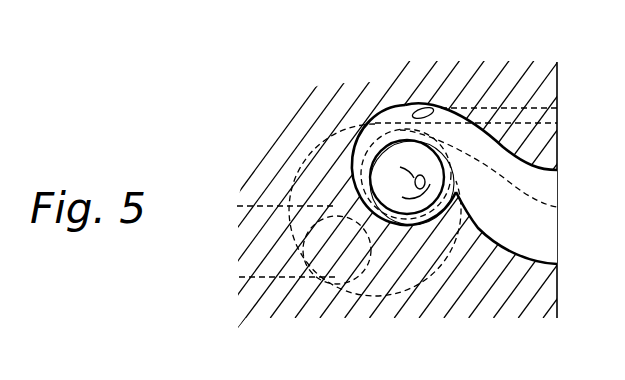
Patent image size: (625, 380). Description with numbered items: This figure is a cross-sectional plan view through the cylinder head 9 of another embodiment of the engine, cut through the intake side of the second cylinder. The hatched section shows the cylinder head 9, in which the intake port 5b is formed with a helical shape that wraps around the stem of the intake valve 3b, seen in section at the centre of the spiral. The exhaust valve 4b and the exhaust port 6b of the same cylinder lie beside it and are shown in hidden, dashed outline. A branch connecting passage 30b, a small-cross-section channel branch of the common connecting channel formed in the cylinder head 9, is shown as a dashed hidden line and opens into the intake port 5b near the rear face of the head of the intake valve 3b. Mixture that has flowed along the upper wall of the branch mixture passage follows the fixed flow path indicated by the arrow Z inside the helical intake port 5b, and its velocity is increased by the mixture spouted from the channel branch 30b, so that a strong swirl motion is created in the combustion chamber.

The intake valve 3b is at (393, 152).
The exhaust valve 4b is at (327, 250).
The intake port 5b is at (532, 230).
The exhaust port 6b is at (246, 207).
The branch connecting passage (channel branch) 30b is at (518, 108).
The cylinder head 9 is at (541, 272).
The arrow indicating the mixture flow path Z is at (409, 207).